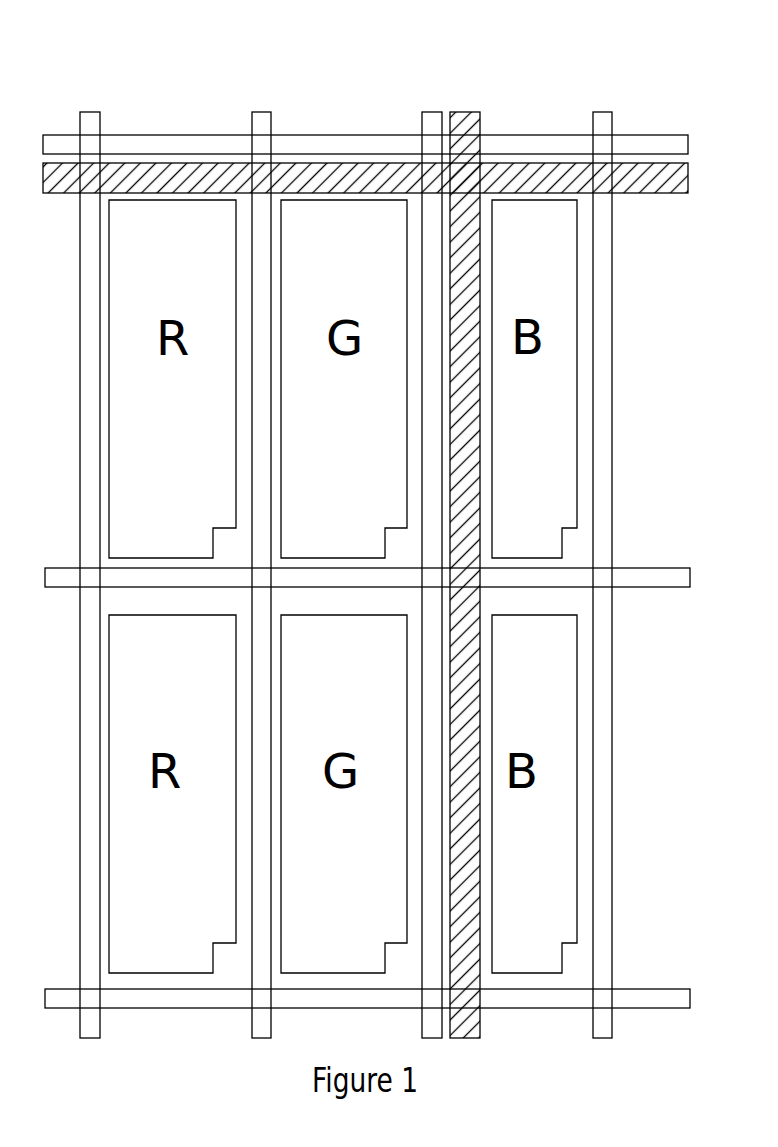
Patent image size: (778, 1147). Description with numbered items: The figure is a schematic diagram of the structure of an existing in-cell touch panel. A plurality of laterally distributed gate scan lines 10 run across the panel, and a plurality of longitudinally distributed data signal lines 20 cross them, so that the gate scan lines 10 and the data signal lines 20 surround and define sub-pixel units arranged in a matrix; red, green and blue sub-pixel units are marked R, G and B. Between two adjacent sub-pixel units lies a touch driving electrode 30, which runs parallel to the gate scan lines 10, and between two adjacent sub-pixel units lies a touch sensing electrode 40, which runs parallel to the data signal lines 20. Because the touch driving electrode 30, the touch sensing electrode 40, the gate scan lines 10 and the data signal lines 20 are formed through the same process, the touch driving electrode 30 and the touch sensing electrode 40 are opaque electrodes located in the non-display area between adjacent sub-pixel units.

The gate scan line 10 is at (180, 148).
The data signal line 20 is at (91, 124).
The touch driving electrode 30 is at (312, 190).
The touch sensing electrode 40 is at (470, 117).